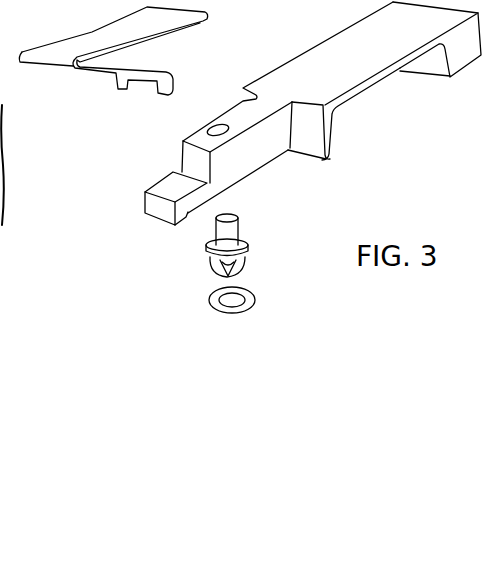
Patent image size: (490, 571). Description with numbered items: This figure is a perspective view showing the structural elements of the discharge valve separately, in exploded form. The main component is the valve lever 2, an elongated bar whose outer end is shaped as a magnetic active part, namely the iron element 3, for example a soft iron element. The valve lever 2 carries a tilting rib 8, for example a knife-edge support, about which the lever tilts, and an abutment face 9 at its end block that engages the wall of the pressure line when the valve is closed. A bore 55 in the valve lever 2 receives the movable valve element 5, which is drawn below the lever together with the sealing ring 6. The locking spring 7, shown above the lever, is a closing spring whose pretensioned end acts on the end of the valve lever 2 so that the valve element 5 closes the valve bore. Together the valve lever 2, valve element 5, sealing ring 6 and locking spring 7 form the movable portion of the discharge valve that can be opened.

The valve lever 2 is at (313, 132).
The iron element 3 is at (463, 60).
The movable valve element 5 is at (228, 232).
The sealing ring 6 is at (250, 297).
The locking spring 7 is at (165, 22).
The tilting rib 8 is at (343, 145).
The abutment face 9 is at (178, 227).
The bore 55 is at (207, 130).